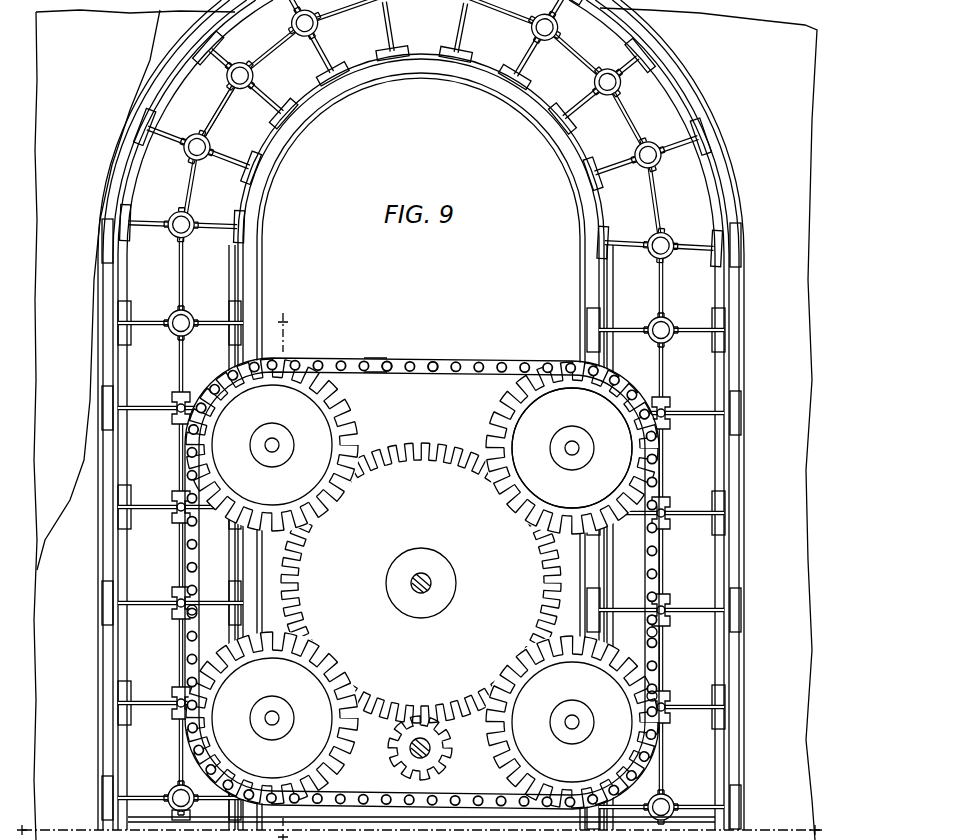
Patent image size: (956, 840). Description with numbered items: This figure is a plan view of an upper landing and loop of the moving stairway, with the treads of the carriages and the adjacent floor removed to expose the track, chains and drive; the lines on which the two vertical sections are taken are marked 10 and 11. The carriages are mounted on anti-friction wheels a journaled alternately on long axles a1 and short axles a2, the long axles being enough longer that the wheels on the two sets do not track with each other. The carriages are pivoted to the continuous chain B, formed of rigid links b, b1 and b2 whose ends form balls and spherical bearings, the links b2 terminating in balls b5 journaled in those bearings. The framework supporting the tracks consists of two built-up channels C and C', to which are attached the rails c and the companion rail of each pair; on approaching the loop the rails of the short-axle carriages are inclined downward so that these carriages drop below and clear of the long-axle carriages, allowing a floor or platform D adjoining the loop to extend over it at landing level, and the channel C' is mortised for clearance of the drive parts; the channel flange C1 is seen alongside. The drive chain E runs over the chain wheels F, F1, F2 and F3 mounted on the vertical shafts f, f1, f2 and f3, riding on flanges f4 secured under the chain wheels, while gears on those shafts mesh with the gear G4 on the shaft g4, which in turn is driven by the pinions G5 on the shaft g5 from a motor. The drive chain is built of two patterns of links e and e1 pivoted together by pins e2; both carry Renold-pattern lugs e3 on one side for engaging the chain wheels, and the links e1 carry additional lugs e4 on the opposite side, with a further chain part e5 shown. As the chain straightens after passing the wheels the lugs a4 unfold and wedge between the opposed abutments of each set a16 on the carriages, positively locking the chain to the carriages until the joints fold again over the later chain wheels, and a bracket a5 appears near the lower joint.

The anti-friction devices or wheels a is at (224, 306).
The long axles a1 is at (152, 240).
The short axles a2 is at (158, 323).
The lugs a4 is at (170, 793).
The lower bracket a5 is at (190, 815).
The abutments a16 is at (186, 400).
The rigid links b is at (275, 120).
The rigid links b1 is at (182, 190).
The rigid links b2 is at (183, 283).
The balls b5 is at (664, 166).
The chain B is at (419, 442).
The built-up channel C is at (421, 415).
The channel flange C1 is at (118, 648).
The built-up channel C' is at (442, 537).
The rail c is at (146, 562).
The floor or platform D is at (425, 424).
The drive chain E is at (441, 569).
The links e is at (412, 360).
The links e1 is at (353, 360).
The pins e2 is at (456, 360).
The lugs e3 is at (433, 374).
The lugs e4 is at (378, 360).
The chain link e5 is at (390, 374).
The chain wheel F is at (561, 722).
The chain wheel F1 is at (555, 448).
The chain wheel F2 is at (281, 445).
The chain wheel F3 is at (279, 718).
The vertical shaft f is at (577, 726).
The vertical shaft f1 is at (573, 455).
The vertical shaft f2 is at (276, 450).
The vertical shaft f3 is at (278, 722).
The flanges f4 is at (488, 432).
The gear G4 is at (421, 571).
The shaft g4 is at (432, 587).
The pinions G5 is at (432, 748).
The shaft g5 is at (432, 750).
The section line 10- 10 is at (414, 832).
The section line 11- 11 is at (279, 569).